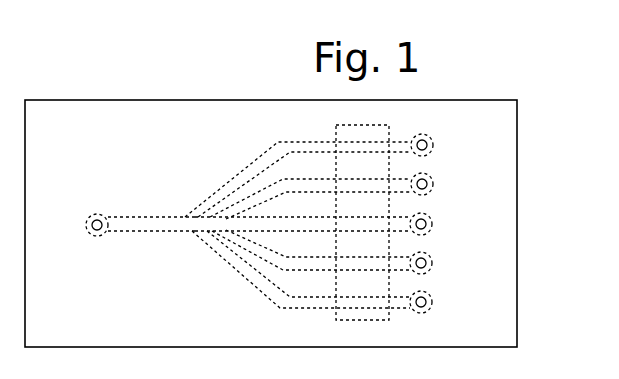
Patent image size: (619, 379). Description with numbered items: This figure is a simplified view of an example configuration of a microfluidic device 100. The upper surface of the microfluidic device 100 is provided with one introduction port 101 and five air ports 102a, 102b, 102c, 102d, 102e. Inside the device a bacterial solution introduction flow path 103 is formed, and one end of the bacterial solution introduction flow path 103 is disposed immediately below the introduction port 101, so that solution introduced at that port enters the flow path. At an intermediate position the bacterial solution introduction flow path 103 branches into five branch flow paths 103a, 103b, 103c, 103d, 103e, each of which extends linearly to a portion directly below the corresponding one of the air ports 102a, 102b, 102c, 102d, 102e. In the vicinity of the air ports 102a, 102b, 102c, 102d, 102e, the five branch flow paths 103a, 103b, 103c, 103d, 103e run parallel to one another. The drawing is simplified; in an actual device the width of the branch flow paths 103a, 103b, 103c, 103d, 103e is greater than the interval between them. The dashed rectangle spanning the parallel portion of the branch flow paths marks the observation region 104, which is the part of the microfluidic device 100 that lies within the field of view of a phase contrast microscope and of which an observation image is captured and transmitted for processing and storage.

The microfluidic device 100 is at (519, 192).
The introduction port 101 is at (88, 217).
The air port 102a is at (429, 139).
The air port 102b is at (429, 178).
The air port 102c is at (428, 218).
The air port 102d is at (428, 257).
The air port 102e is at (428, 296).
The bacterial solution introduction flow path 103 is at (142, 217).
The branch flow path 103a is at (335, 178).
The branch flow path 103b is at (285, 164).
The branch flow path 103c is at (320, 230).
The branch flow path 103d is at (322, 270).
The branch flow path 103e is at (326, 306).
The observation region 104 is at (392, 319).